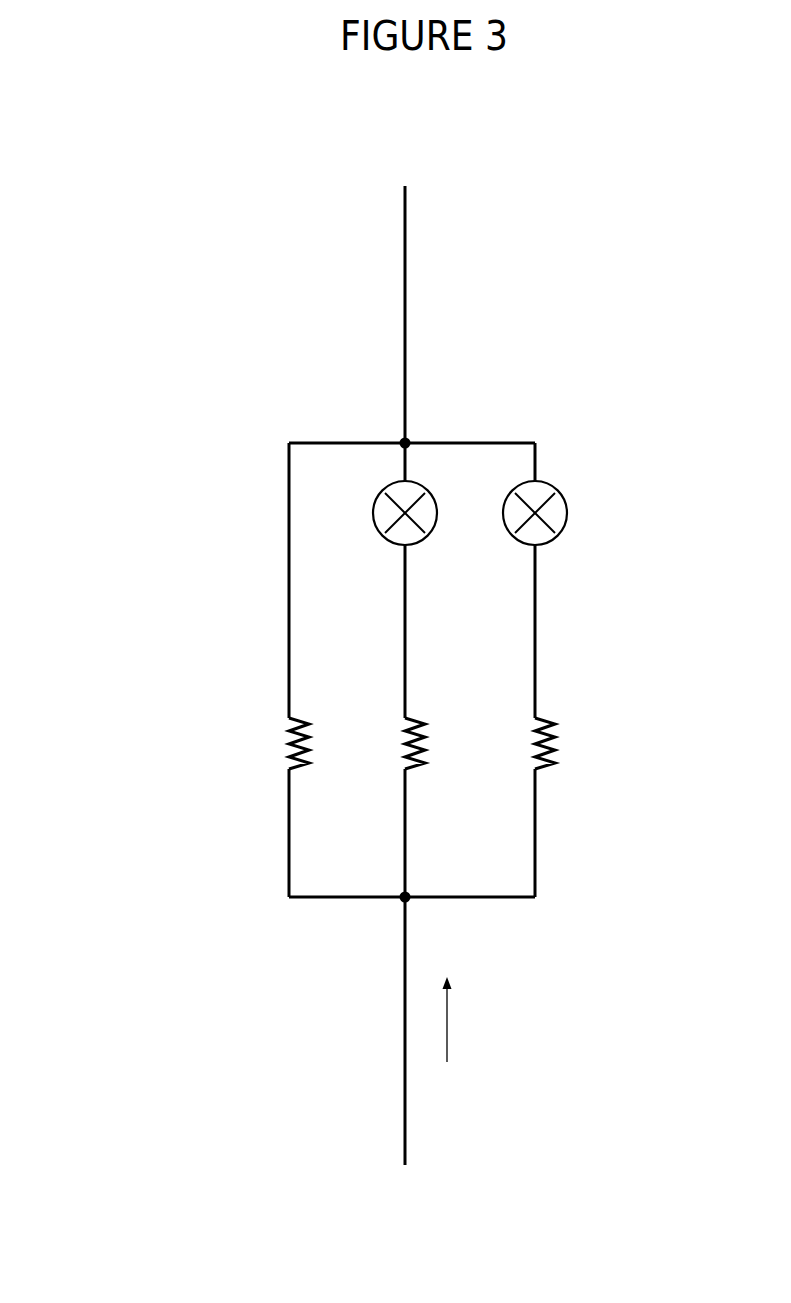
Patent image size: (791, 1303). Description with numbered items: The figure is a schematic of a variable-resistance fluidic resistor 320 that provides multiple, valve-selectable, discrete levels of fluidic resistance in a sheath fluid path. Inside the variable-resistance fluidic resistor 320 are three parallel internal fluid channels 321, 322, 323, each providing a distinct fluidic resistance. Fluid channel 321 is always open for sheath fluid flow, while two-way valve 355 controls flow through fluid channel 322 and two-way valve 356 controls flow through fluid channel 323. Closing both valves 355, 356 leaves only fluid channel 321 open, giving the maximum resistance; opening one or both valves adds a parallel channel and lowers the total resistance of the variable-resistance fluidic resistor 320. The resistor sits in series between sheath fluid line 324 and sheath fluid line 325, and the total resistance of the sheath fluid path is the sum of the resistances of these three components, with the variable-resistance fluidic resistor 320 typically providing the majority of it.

The variable-resistance fluidic resistor 320 is at (366, 675).
The internal fluid channel 321 is at (255, 670).
The internal fluid channel 322 is at (388, 643).
The internal fluid channel 323 is at (581, 670).
The sheath fluid line 324 is at (372, 1031).
The sheath fluid line 325 is at (346, 314).
The two-way valve 355 is at (581, 503).
The two-way valve 356 is at (489, 467).